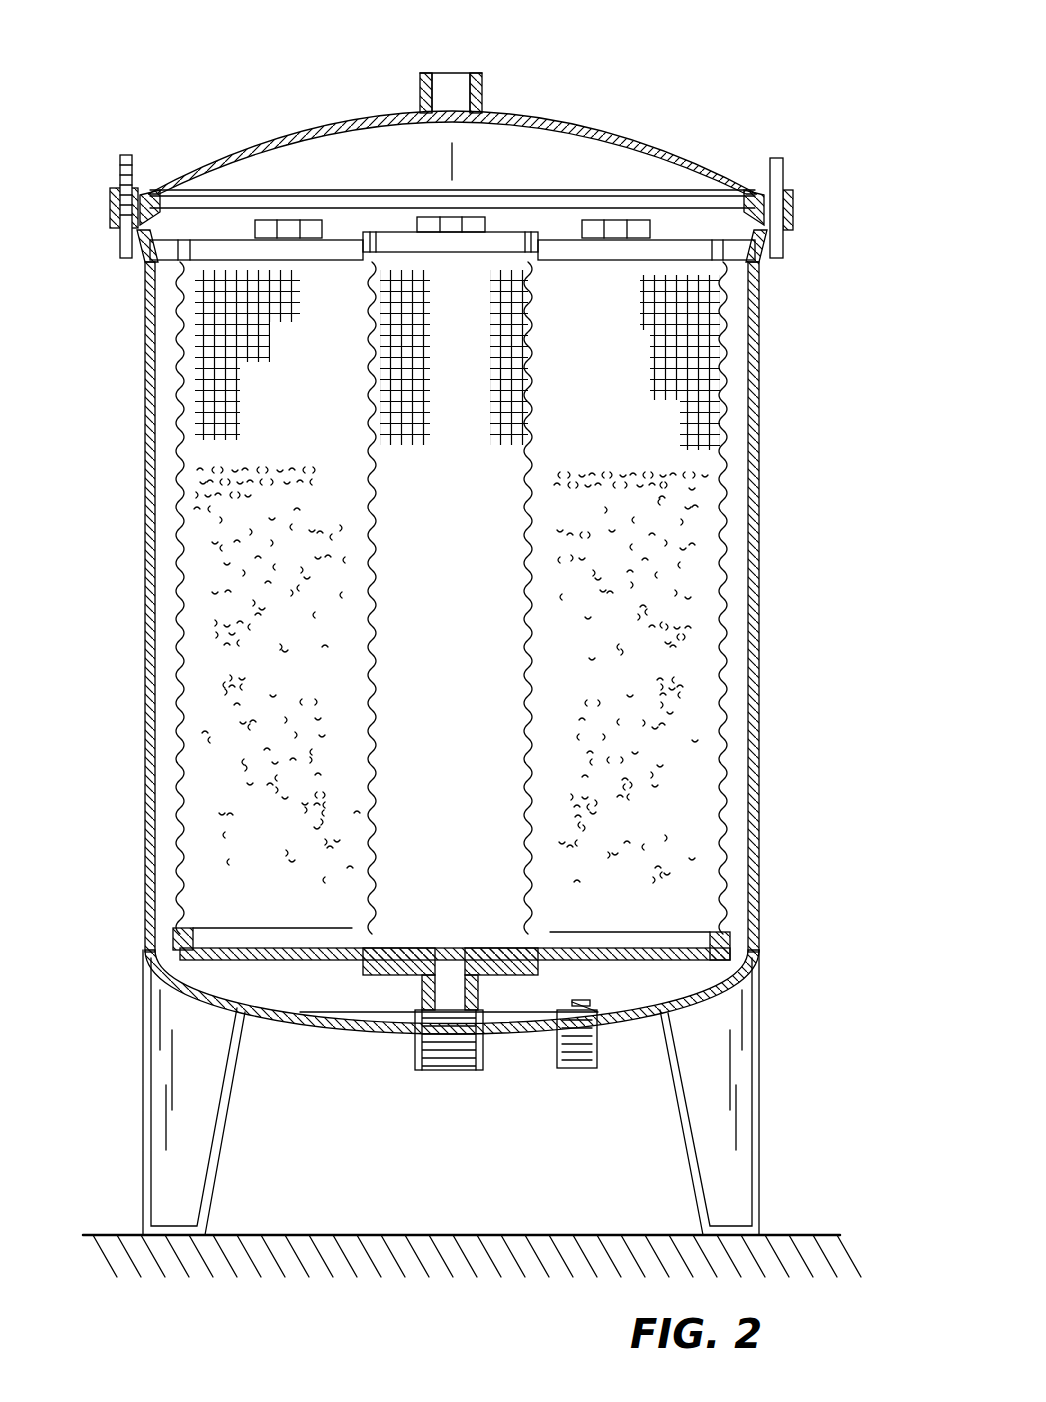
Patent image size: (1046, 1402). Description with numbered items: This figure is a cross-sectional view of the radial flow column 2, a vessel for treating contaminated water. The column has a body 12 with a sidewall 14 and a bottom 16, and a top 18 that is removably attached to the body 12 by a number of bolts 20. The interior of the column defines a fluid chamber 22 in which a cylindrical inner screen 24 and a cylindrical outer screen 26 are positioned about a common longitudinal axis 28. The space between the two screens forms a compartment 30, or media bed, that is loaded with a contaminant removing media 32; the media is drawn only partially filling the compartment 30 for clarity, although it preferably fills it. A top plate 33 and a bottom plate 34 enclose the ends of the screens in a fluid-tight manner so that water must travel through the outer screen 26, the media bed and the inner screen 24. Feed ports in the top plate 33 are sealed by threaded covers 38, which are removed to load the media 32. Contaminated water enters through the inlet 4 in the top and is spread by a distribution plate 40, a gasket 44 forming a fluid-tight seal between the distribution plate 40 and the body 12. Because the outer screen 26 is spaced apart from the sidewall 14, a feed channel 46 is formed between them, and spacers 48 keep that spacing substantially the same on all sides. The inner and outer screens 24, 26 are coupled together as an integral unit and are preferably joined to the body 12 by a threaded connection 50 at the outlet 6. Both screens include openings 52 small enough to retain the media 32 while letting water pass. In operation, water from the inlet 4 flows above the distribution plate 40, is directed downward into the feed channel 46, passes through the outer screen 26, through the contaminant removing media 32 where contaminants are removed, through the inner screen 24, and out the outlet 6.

The radial flow column 2 is at (690, 70).
The inlet 4 is at (482, 96).
The outlet 6 is at (483, 1062).
The body 12 is at (770, 285).
The sidewall 14 is at (762, 645).
The bottom 16 is at (300, 1025).
The top 18 is at (300, 126).
The bolts 20 is at (118, 170).
The fluid chamber 22 is at (352, 995).
The inner screen 24 is at (535, 330).
The outer screen 26 is at (188, 296).
The longitudinal axis 28 is at (452, 265).
The compartment 30 is at (645, 395).
The contaminant removing media 32 is at (262, 475).
The top plate 33 is at (598, 262).
The bottom plate 34 is at (235, 930).
The threaded covers 38 is at (300, 228).
The distribution plate 40 is at (233, 207).
The gasket 44 is at (155, 190).
The feed channel 46 is at (168, 540).
The spacers 48 is at (148, 282).
The threaded connection 50 is at (480, 1020).
The openings 52 is at (222, 380).